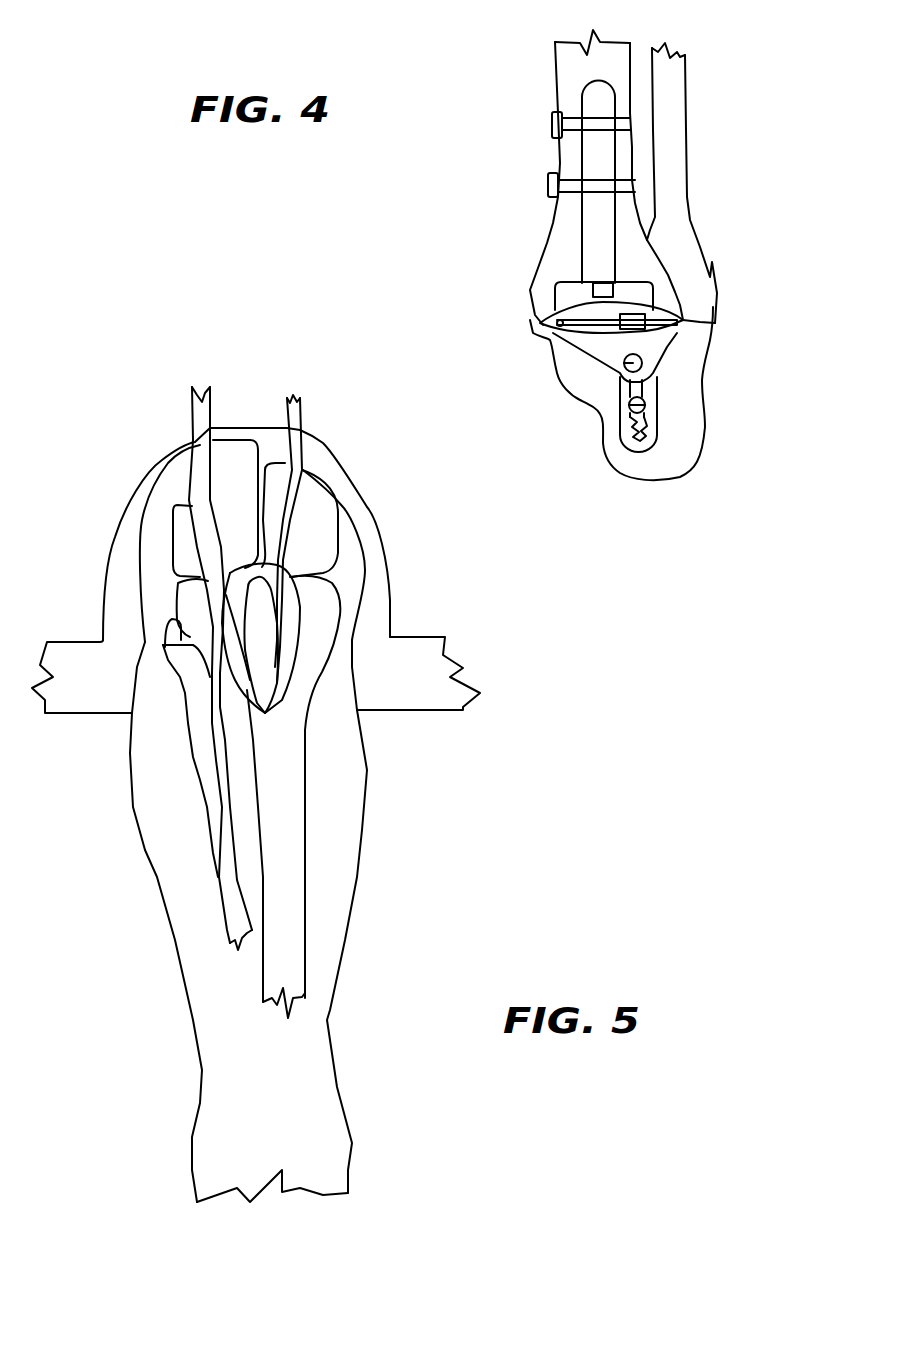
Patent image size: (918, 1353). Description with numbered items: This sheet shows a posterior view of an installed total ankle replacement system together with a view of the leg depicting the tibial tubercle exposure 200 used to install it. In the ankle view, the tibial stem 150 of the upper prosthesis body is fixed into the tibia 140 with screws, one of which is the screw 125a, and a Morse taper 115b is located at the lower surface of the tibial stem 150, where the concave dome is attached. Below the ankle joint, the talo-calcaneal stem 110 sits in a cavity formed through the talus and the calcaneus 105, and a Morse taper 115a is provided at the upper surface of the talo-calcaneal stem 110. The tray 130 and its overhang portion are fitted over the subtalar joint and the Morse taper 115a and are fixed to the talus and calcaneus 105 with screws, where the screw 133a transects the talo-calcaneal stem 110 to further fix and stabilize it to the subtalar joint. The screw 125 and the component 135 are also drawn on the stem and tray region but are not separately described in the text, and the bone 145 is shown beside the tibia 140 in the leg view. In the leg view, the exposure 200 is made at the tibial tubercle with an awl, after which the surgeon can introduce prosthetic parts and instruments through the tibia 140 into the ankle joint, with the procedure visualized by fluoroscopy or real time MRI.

In FIG. 4, the calcaneus 105 is at (627, 460).
In FIG. 4, the talo-calcaneal stem 110 is at (657, 433).
In FIG. 4, the Morse taper 115a is at (567, 327).
In FIG. 4, the Morse taper 115b is at (557, 302).
In FIG. 4, the screw 125 is at (640, 390).
In FIG. 4, the screw 125a is at (630, 118).
In FIG. 4, the tray 130 is at (703, 325).
In FIG. 4, the screw 133a is at (629, 364).
In FIG. 4, the talar component 135 is at (647, 349).
In FIG. 4, the tibia 140 is at (558, 228).
In FIG. 5, the tibia 140 is at (287, 802).
In FIG. 5, the fibula 145 is at (210, 779).
In FIG. 4, the tibial stem 150 is at (603, 228).
In FIG. 5, the exposure 200 is at (265, 673).